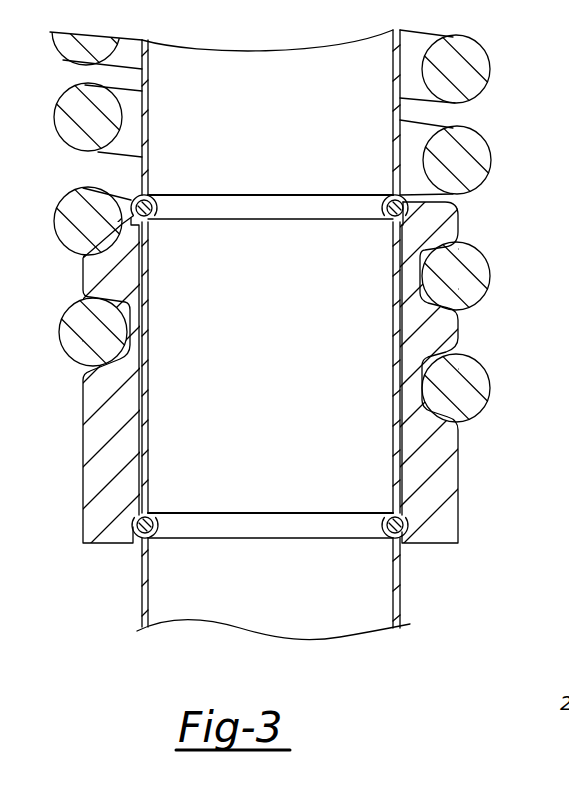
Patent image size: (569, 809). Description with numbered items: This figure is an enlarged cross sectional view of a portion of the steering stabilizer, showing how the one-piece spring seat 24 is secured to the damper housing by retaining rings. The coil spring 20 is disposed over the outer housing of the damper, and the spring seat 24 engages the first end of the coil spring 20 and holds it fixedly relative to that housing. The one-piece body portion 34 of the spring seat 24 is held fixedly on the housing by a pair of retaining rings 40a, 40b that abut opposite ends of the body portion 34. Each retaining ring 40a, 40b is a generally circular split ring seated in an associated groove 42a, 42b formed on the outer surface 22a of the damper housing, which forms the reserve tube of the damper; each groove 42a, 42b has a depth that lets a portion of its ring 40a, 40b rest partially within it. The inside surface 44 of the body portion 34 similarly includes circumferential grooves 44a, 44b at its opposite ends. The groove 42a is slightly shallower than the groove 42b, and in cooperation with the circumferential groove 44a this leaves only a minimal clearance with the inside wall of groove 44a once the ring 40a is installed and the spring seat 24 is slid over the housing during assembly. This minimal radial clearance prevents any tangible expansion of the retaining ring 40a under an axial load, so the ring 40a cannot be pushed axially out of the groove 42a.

The coil spring 20 is at (473, 164).
The outer surface of the damper housing 22a is at (142, 584).
The one-piece spring seat 24 is at (68, 434).
The one-piece body portion 34 is at (103, 392).
The retaining ring 40a is at (387, 212).
The retaining ring 40b is at (392, 514).
The groove 42a is at (134, 204).
The groove 42b is at (135, 523).
The inside surface 44 is at (148, 283).
The circumferential groove 44a is at (392, 203).
The circumferential groove 44b is at (400, 540).